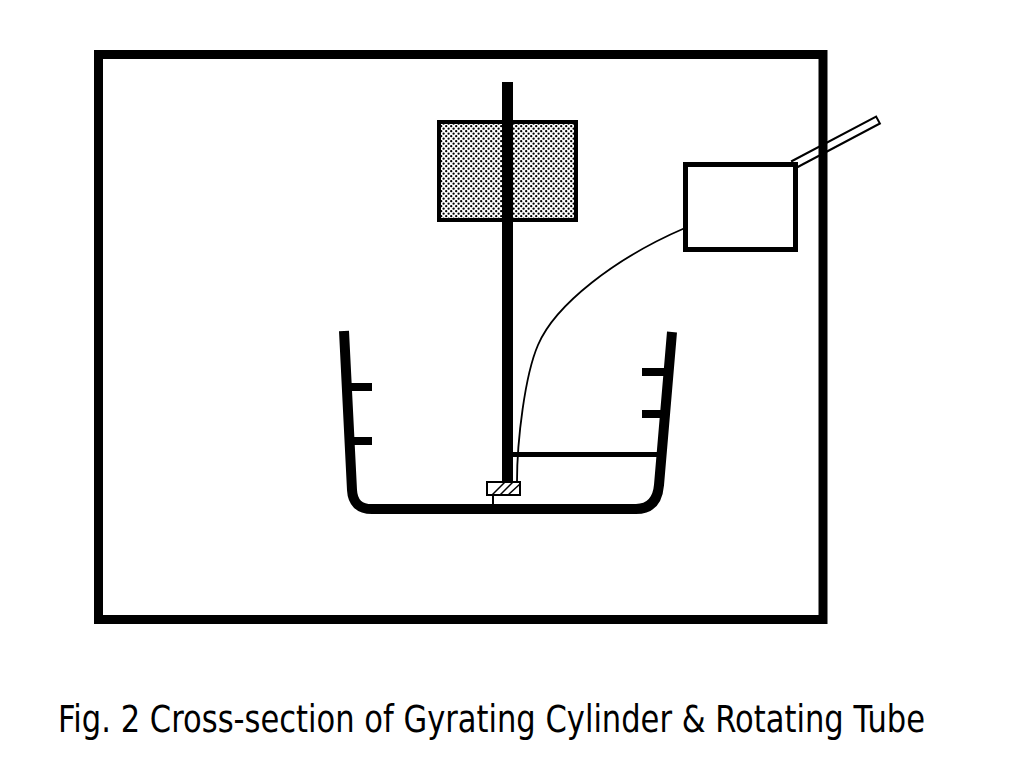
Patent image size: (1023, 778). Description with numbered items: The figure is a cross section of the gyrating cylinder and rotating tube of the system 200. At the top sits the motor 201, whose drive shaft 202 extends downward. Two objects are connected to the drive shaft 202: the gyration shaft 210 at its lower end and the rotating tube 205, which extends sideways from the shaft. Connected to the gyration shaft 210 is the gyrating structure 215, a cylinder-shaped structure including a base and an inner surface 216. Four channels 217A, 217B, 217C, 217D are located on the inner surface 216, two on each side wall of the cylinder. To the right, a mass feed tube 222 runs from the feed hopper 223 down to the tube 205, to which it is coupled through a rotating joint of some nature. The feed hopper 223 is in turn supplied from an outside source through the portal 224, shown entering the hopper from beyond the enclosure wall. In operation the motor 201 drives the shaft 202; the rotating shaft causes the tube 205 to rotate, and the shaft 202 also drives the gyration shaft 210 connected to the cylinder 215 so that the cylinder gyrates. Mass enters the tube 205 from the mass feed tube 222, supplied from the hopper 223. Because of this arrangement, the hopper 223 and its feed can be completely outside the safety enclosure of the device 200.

The system 200 is at (837, 303).
The motor 201 is at (425, 178).
The drive shaft 202 is at (492, 317).
The rotating tube 205 is at (628, 460).
The gyration shaft 210 is at (492, 476).
The gyrating structure 215 is at (537, 523).
The inner surface 216 is at (372, 497).
The channel 217A is at (388, 440).
The channel 217B is at (387, 386).
The channel 217C is at (712, 275).
The channel 217D is at (628, 415).
The mass feed tube 222 is at (575, 287).
The feed hopper 223 is at (748, 150).
The portal 224 is at (803, 133).